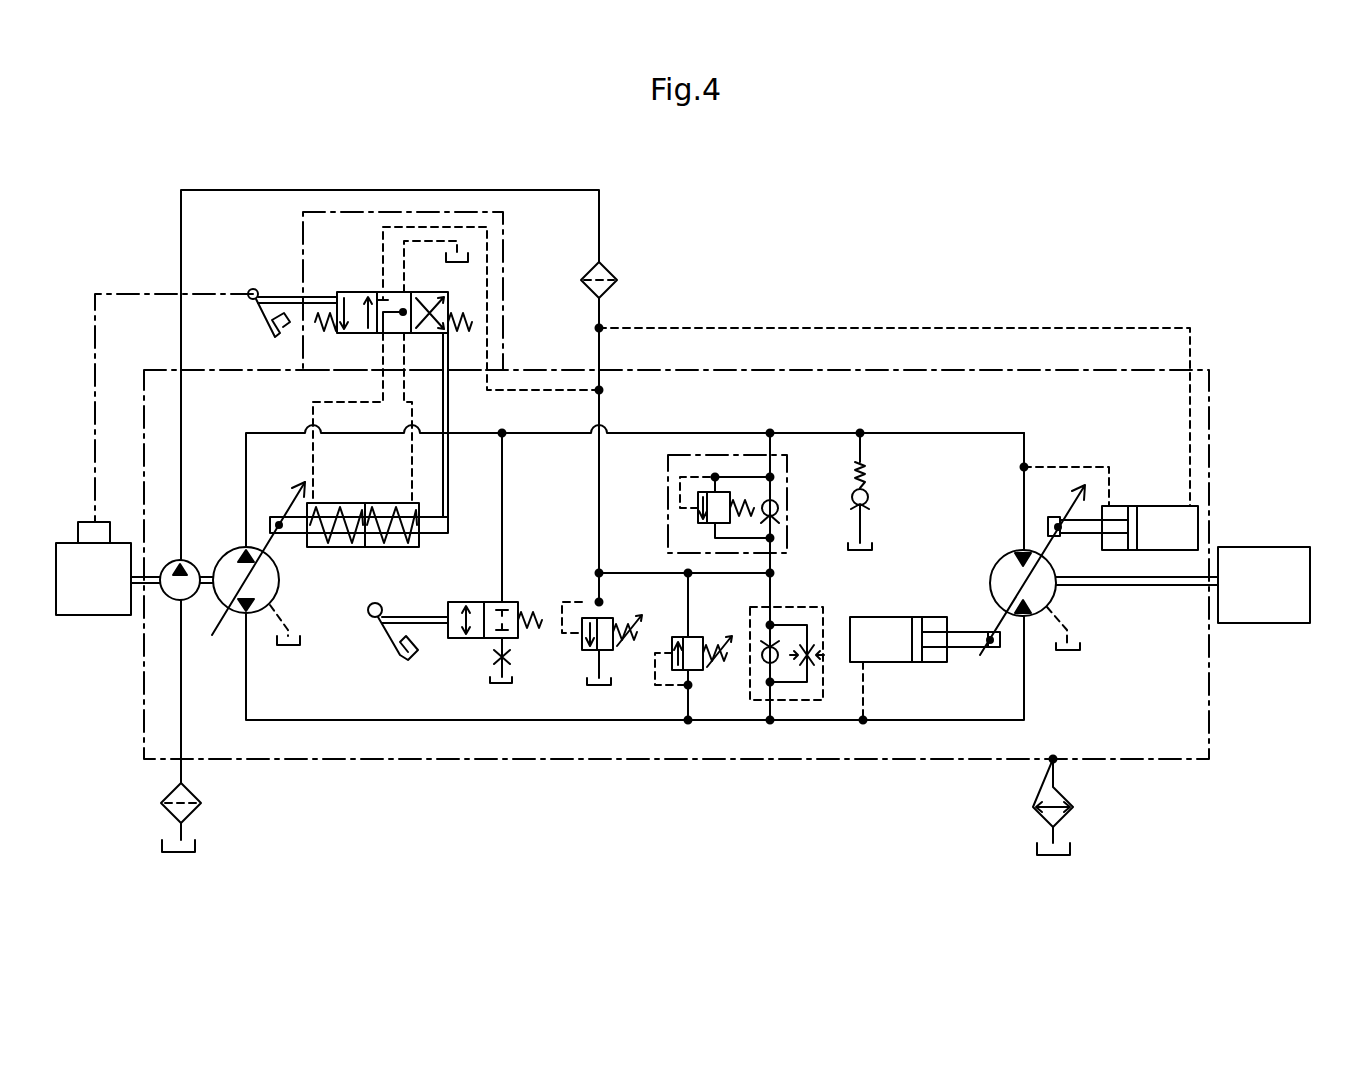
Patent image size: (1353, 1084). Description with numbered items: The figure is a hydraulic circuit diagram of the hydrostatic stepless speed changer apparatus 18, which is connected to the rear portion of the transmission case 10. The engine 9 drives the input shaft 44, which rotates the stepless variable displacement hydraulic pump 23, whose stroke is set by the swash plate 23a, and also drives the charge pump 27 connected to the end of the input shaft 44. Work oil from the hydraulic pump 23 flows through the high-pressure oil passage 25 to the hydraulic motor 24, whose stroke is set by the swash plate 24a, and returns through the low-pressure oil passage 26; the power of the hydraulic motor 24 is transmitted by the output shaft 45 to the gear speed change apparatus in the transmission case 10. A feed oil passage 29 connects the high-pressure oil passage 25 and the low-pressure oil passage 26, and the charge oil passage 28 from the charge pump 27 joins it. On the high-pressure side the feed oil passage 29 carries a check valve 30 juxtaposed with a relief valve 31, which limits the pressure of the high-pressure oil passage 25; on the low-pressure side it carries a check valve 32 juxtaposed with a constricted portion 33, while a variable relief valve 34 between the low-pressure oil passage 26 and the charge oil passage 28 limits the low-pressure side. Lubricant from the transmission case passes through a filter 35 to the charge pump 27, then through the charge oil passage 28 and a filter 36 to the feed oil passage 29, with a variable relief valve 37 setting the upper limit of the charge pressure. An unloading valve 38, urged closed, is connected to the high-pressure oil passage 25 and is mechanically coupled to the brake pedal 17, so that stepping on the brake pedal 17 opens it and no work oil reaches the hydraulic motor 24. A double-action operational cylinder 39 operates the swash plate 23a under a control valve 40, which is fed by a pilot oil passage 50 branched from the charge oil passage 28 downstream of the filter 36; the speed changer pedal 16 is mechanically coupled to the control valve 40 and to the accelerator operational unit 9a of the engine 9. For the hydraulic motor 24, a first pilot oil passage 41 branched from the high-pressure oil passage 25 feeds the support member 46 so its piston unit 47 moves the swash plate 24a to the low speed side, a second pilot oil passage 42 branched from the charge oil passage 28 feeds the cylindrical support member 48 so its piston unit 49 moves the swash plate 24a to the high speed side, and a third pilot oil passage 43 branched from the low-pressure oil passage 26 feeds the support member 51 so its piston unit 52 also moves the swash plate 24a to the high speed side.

The engine 9 is at (203, 876).
The accelerator operational unit 9a is at (106, 532).
The transmission case 10 is at (1264, 585).
The speed changer pedal 16 is at (262, 318).
The brake pedal 17 is at (388, 648).
The hydrostatic stepless speed changer apparatus 18 is at (1104, 270).
The hydraulic pump 23 is at (280, 578).
The swash plate 23a is at (290, 505).
The hydraulic motor 24 is at (988, 583).
The swash plate 24a is at (1050, 540).
The high-pressure oil passage 25 is at (908, 433).
The low-pressure oil passage 26 is at (483, 722).
The charge pump 27 is at (195, 560).
The charge oil passage 28 is at (600, 203).
The feed oil passage 29 is at (773, 584).
The check valve 30 is at (777, 514).
The relief valve 31 is at (696, 514).
The check valve 32 is at (763, 665).
The constricted portion 33 is at (816, 658).
The variable relief valve 34 is at (676, 637).
The filter 35 is at (165, 790).
The filter 36 is at (610, 272).
The variable relief valve 37 is at (582, 640).
The unloading valve 38 is at (460, 600).
The double-action operational cylinder 39 is at (362, 502).
The control valve 40 is at (355, 291).
The first pilot oil passage 41 is at (1074, 465).
The second pilot oil passage 42 is at (910, 326).
The third pilot oil passage 43 is at (868, 688).
The input shaft 44 is at (150, 588).
The output shaft 45 is at (1138, 588).
The support member 46 is at (1122, 505).
The piston unit 47 is at (1033, 510).
The cylindrical support member 48 is at (1168, 505).
The piston unit 49 is at (1055, 520).
The pilot oil passage 50 is at (527, 396).
The support member 51 is at (880, 616).
The piston unit 52 is at (962, 650).